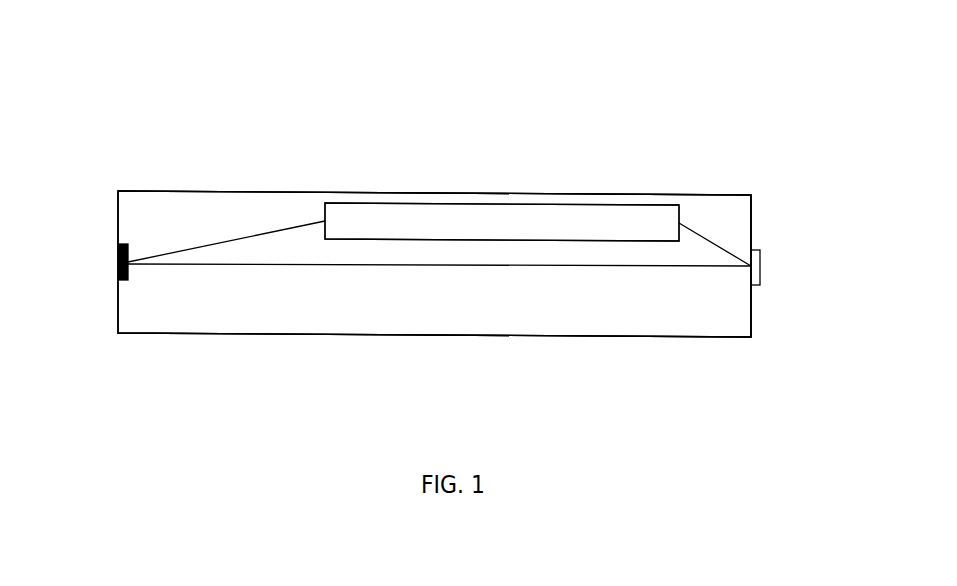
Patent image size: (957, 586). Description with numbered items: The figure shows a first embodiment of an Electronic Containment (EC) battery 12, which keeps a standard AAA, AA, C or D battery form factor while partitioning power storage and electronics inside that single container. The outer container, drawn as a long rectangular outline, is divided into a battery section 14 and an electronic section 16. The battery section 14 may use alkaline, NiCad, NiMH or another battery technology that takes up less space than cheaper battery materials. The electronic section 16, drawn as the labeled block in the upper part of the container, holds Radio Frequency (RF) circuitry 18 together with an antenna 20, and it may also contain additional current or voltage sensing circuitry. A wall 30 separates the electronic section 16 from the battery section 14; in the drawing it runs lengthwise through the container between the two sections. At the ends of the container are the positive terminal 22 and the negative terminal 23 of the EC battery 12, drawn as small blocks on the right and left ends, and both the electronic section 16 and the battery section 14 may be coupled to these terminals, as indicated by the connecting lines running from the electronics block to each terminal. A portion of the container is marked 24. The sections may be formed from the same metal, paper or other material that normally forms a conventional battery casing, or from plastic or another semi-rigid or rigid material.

The Electronic Containment (EC) battery 12 is at (123, 88).
The battery section 14 is at (153, 330).
The electronic section 16 is at (148, 203).
The Radio Frequency (RF) circuitry 18 is at (350, 204).
The antenna 20 is at (502, 222).
The positive terminal 22 is at (762, 265).
The negative terminal 23 is at (111, 250).
The housing wall 24 is at (751, 195).
The wall 30 is at (703, 266).